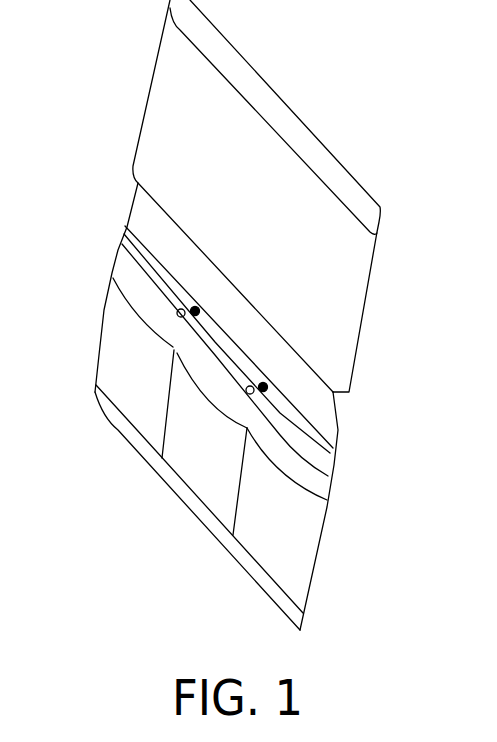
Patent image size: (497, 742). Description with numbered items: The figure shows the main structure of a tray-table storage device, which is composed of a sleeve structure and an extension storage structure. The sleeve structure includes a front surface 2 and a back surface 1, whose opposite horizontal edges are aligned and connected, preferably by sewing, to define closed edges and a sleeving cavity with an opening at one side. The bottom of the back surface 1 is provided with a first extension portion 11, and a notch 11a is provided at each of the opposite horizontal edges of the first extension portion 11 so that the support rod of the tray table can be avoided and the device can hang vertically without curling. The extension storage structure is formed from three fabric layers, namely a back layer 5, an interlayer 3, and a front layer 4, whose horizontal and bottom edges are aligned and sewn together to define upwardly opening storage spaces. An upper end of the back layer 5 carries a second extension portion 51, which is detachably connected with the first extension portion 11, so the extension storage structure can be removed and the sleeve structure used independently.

The back surface 1 is at (373, 218).
The front surface 2 is at (347, 288).
The first extension portion 11 is at (132, 202).
The notch 11a is at (342, 407).
The second extension portion 51 is at (340, 450).
The interlayer 3 is at (327, 483).
The back layer 5 is at (320, 532).
The front layer 4 is at (292, 542).